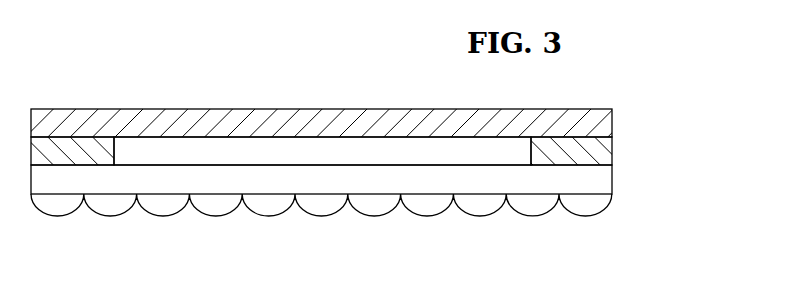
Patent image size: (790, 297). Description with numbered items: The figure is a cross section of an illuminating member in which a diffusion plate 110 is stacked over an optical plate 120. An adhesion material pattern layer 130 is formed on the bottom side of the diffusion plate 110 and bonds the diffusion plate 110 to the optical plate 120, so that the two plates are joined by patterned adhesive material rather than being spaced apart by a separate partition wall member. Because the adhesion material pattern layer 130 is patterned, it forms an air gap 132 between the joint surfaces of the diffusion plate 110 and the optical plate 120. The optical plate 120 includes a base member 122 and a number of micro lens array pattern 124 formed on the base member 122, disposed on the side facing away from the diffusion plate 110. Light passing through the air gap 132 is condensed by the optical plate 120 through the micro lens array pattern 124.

The diffusion plate 110 is at (604, 122).
The adhesion material pattern layer 130 is at (598, 152).
The air gap 132 is at (137, 150).
The optical plate 120 is at (375, 210).
The base member 122 is at (608, 181).
The micro lens array pattern 124 is at (340, 223).